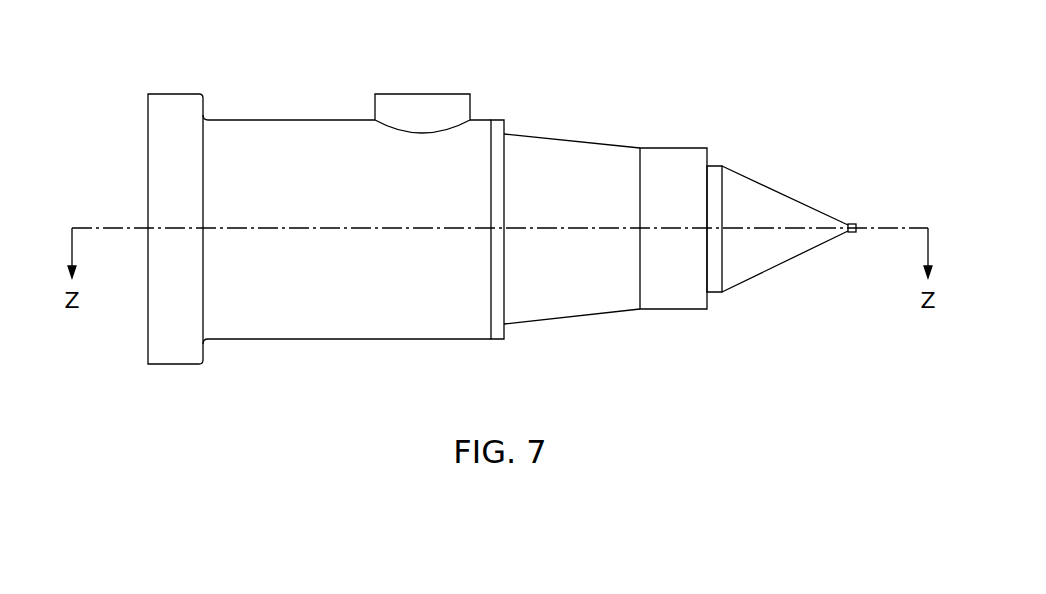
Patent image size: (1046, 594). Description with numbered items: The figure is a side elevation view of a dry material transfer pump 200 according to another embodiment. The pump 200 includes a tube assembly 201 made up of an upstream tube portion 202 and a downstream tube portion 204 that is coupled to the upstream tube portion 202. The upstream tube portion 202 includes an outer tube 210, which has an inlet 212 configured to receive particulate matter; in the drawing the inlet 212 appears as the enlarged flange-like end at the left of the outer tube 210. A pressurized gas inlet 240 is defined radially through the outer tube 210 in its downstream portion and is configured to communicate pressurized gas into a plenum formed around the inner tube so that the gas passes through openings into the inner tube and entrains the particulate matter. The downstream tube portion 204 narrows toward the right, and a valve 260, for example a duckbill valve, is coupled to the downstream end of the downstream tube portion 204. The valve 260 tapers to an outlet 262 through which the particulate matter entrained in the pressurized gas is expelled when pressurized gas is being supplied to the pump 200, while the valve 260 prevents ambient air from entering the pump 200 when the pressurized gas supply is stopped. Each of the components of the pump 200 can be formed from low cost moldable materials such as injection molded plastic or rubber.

The dry material transfer pump 200 is at (465, 195).
The tube assembly 201 is at (282, 190).
The upstream tube portion 202 is at (585, 206).
The downstream tube portion 204 is at (606, 316).
The outer tube 210 is at (273, 128).
The inlet 212 is at (148, 188).
The pressurized gas inlet 240 is at (403, 93).
The valve 260 is at (772, 270).
The outlet 262 is at (852, 235).